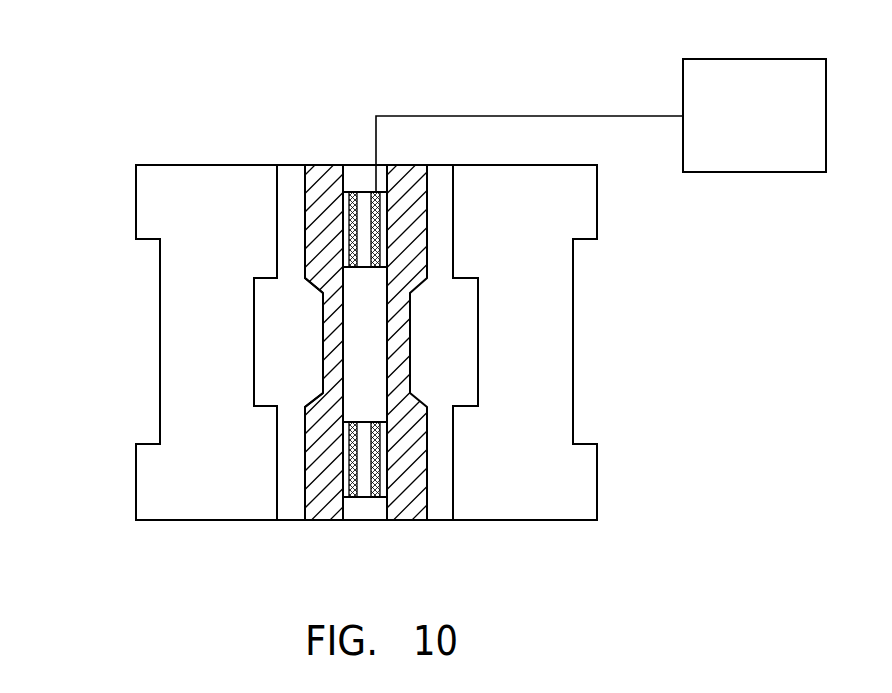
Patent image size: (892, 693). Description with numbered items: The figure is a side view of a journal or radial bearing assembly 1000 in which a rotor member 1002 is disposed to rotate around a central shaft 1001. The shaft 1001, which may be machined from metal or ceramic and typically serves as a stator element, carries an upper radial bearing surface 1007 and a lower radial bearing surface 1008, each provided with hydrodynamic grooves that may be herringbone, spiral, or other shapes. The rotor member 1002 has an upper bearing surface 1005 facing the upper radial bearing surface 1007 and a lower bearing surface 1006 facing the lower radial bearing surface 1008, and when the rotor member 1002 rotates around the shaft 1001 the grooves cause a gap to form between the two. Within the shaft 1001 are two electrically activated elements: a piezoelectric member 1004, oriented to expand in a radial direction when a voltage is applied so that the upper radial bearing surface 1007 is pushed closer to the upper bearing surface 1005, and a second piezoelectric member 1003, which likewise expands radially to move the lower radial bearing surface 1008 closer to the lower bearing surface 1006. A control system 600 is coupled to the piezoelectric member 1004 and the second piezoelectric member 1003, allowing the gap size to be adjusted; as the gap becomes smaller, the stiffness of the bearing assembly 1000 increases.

The journal or radial bearing assembly 1000 is at (98, 97).
The shaft 1001 is at (321, 503).
The rotor member 1002 is at (562, 268).
The second piezoelectric member 1003 is at (370, 485).
The piezoelectric member 1004 is at (362, 210).
The upper bearing surface 1005 is at (279, 197).
The lower bearing surface 1006 is at (288, 445).
The upper radial bearing surface 1007 is at (303, 243).
The lower radial bearing surface 1008 is at (310, 485).
The control system 600 is at (755, 58).